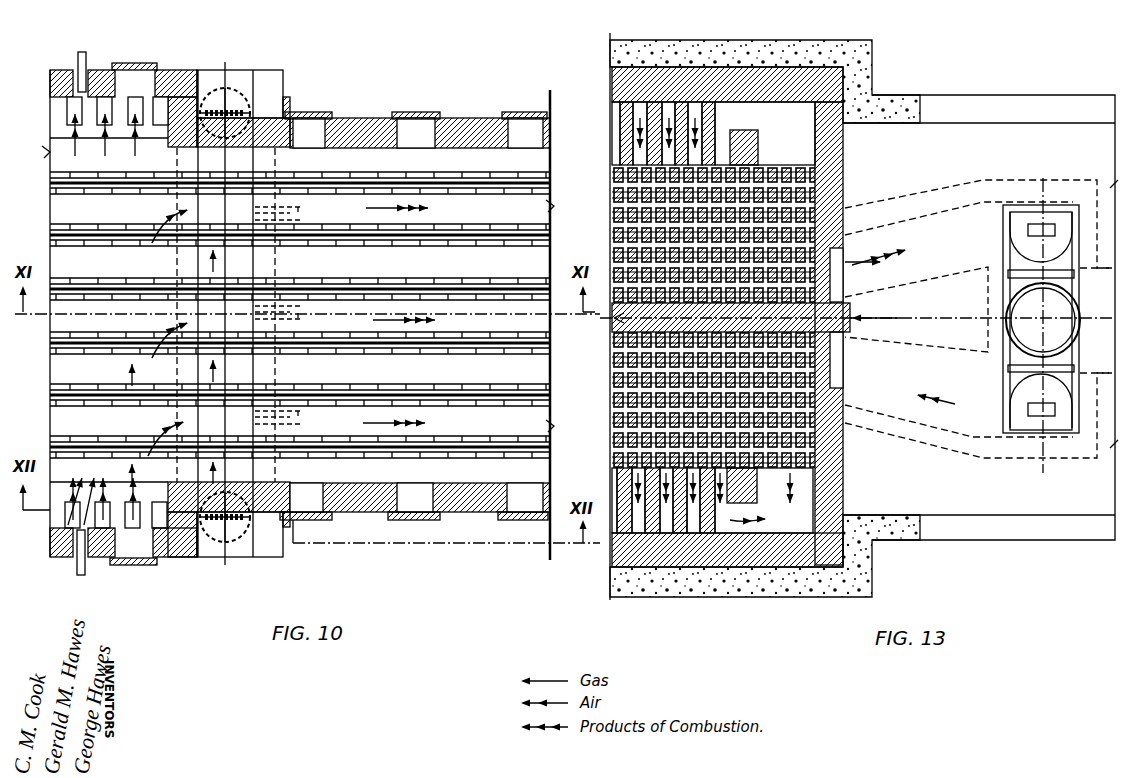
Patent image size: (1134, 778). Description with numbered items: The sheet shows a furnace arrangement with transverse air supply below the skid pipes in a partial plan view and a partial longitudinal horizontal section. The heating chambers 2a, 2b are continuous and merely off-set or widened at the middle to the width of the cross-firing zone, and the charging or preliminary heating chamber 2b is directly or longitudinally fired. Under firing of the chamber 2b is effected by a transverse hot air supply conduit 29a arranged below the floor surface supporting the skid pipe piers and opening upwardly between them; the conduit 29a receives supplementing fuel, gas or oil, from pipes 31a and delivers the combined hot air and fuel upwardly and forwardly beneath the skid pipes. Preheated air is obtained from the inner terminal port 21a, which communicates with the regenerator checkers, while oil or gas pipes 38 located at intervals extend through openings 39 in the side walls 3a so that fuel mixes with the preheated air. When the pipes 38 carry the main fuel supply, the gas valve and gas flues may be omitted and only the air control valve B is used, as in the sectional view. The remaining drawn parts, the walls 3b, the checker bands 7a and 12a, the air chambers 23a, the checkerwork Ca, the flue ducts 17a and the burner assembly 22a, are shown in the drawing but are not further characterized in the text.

In FIG. 10, the side wall 3a is at (66, 70).
In FIG. 10, the oil or gas pipe 38 is at (86, 62).
In FIG. 10, the opening 39 is at (90, 70).
In FIG. 10, the inner terminal port 21a is at (160, 110).
In FIG. 13, the inner terminal port 21a is at (698, 150).
In FIG. 10, the side wall 3b is at (462, 118).
In FIG. 10, the upper checker band 7a is at (488, 238).
In FIG. 10, the heating chamber 2a is at (134, 331).
In FIG. 10, the transverse hot air supply conduit 29a is at (202, 313).
In FIG. 10, the fuel pipe 31a is at (288, 308).
In FIG. 10, the charging or preliminary heating chamber 2b is at (409, 316).
In FIG. 10, the lower checker band 12a is at (446, 426).
In FIG. 13, the air chamber 23a is at (788, 606).
In FIG. 13, the checkerwork Ca is at (780, 433).
In FIG. 13, the flue duct 17a is at (978, 319).
In FIG. 13, the burner assembly 22a is at (1056, 325).
In FIG. 13, the air control valve B is at (1043, 320).